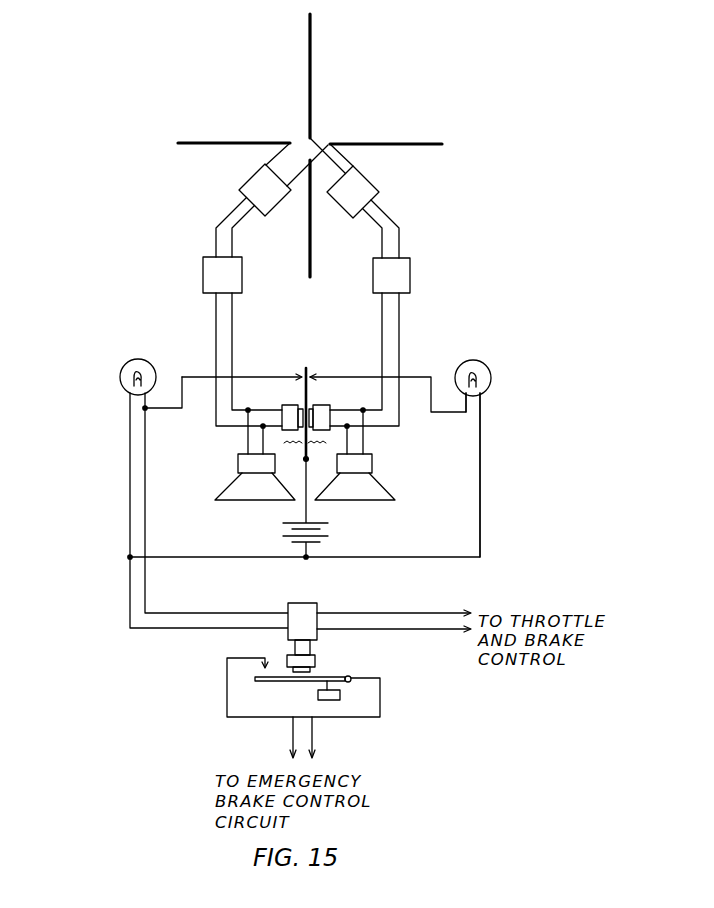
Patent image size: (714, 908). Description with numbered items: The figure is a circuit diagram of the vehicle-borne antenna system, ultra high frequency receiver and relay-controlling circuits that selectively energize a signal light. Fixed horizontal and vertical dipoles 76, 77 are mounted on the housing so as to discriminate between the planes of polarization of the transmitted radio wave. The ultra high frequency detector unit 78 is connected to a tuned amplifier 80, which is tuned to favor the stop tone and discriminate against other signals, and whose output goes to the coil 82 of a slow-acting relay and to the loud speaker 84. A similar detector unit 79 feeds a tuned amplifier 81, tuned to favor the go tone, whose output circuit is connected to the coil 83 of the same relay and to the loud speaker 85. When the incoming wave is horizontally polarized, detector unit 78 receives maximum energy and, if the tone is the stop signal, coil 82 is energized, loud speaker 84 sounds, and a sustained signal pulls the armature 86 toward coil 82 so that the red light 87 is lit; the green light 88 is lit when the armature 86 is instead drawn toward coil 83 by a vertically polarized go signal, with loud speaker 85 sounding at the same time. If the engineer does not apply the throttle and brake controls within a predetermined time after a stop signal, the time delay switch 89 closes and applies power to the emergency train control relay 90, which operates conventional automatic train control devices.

The horizontal dipole 76 is at (275, 142).
The vertical dipole 77 is at (312, 58).
The ultra high frequency detector unit 78 is at (240, 185).
The ultra high frequency detector unit 79 is at (378, 184).
The tuned amplifier 80 is at (202, 272).
The tuned amplifier 81 is at (410, 272).
The relay coil 82 is at (285, 406).
The relay coil 83 is at (320, 405).
The loud speaker 84 is at (238, 460).
The loud speaker 85 is at (372, 462).
The armature 86 is at (307, 370).
The red light 87 is at (120, 370).
The green lamp 88 is at (492, 368).
The time delay switch 89 is at (287, 622).
The emergency train control relay 90 is at (278, 682).